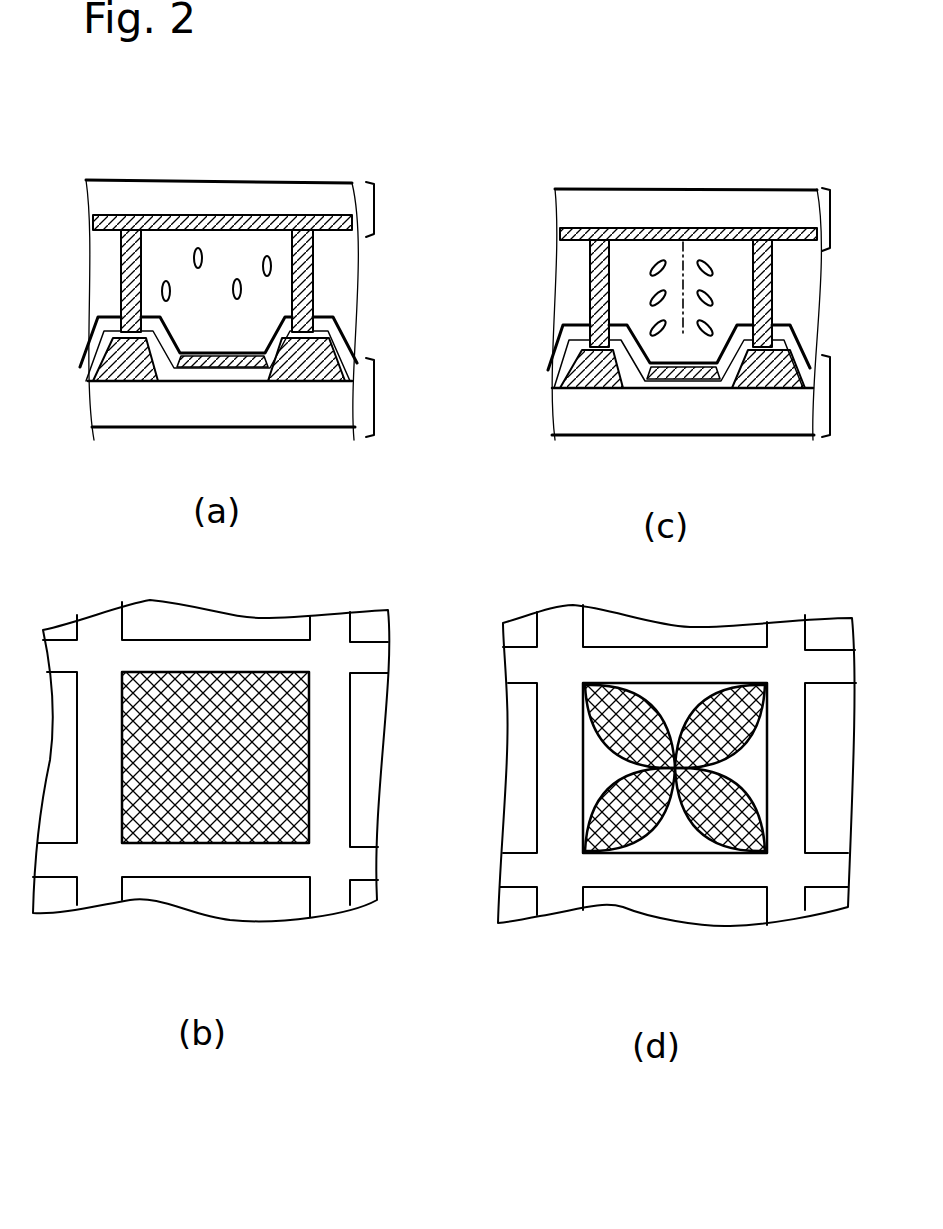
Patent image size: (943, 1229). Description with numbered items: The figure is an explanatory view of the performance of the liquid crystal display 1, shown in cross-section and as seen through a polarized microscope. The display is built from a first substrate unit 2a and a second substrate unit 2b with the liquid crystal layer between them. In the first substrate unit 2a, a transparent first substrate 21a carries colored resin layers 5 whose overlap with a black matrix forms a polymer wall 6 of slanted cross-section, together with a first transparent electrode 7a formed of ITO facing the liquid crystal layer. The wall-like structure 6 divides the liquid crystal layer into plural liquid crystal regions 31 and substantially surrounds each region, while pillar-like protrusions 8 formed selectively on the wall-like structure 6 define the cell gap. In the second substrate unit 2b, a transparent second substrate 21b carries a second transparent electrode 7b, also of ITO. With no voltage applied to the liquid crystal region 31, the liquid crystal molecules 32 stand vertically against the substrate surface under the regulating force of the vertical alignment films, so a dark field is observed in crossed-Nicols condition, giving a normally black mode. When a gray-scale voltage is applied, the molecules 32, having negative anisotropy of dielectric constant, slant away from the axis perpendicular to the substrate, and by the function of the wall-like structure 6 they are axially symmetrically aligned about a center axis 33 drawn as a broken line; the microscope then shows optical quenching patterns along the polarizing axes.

The liquid crystal display 1 is at (338, 166).
The first substrate unit 2a is at (625, 396).
The second substrate unit 2b is at (631, 216).
The colored resin layer 5 is at (107, 428).
The polymer wall 6 is at (293, 388).
The first transparent electrode 7a is at (180, 384).
The second transparent electrode 7b is at (123, 214).
The pillar-like protrusion 8 is at (118, 292).
The first substrate 21a is at (233, 407).
The second substrate 21b is at (223, 202).
The liquid crystal region 31 is at (273, 300).
The liquid crystal molecule 32 is at (238, 278).
The center axis 33 is at (672, 238).